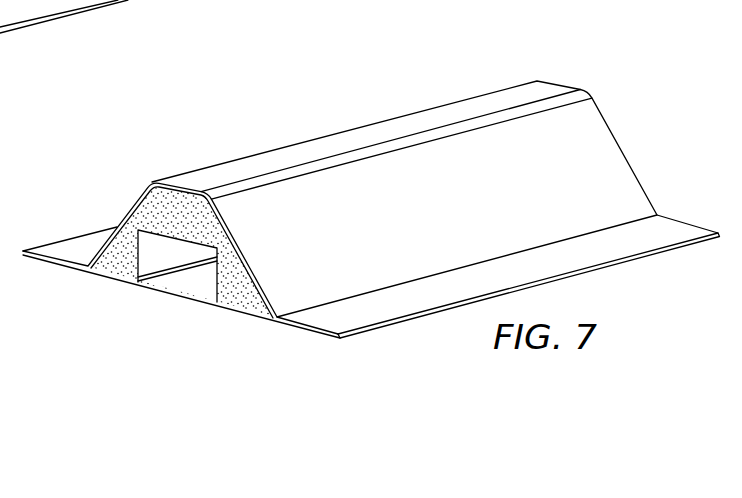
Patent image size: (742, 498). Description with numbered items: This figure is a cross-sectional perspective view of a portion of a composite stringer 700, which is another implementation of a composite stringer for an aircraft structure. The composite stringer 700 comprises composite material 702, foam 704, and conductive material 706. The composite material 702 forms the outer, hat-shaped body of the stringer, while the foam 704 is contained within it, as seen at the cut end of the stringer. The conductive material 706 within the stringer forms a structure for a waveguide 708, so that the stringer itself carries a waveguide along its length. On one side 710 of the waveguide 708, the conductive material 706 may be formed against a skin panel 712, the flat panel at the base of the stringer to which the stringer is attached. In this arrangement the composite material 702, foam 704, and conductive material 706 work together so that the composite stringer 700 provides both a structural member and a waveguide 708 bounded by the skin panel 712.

The composite stringer 700 is at (371, 176).
The composite material 702 is at (370, 130).
The foam 704 is at (117, 250).
The conductive material 706 is at (148, 245).
The waveguide 708 is at (128, 267).
The side 710 is at (207, 283).
The skin panel 712 is at (177, 296).